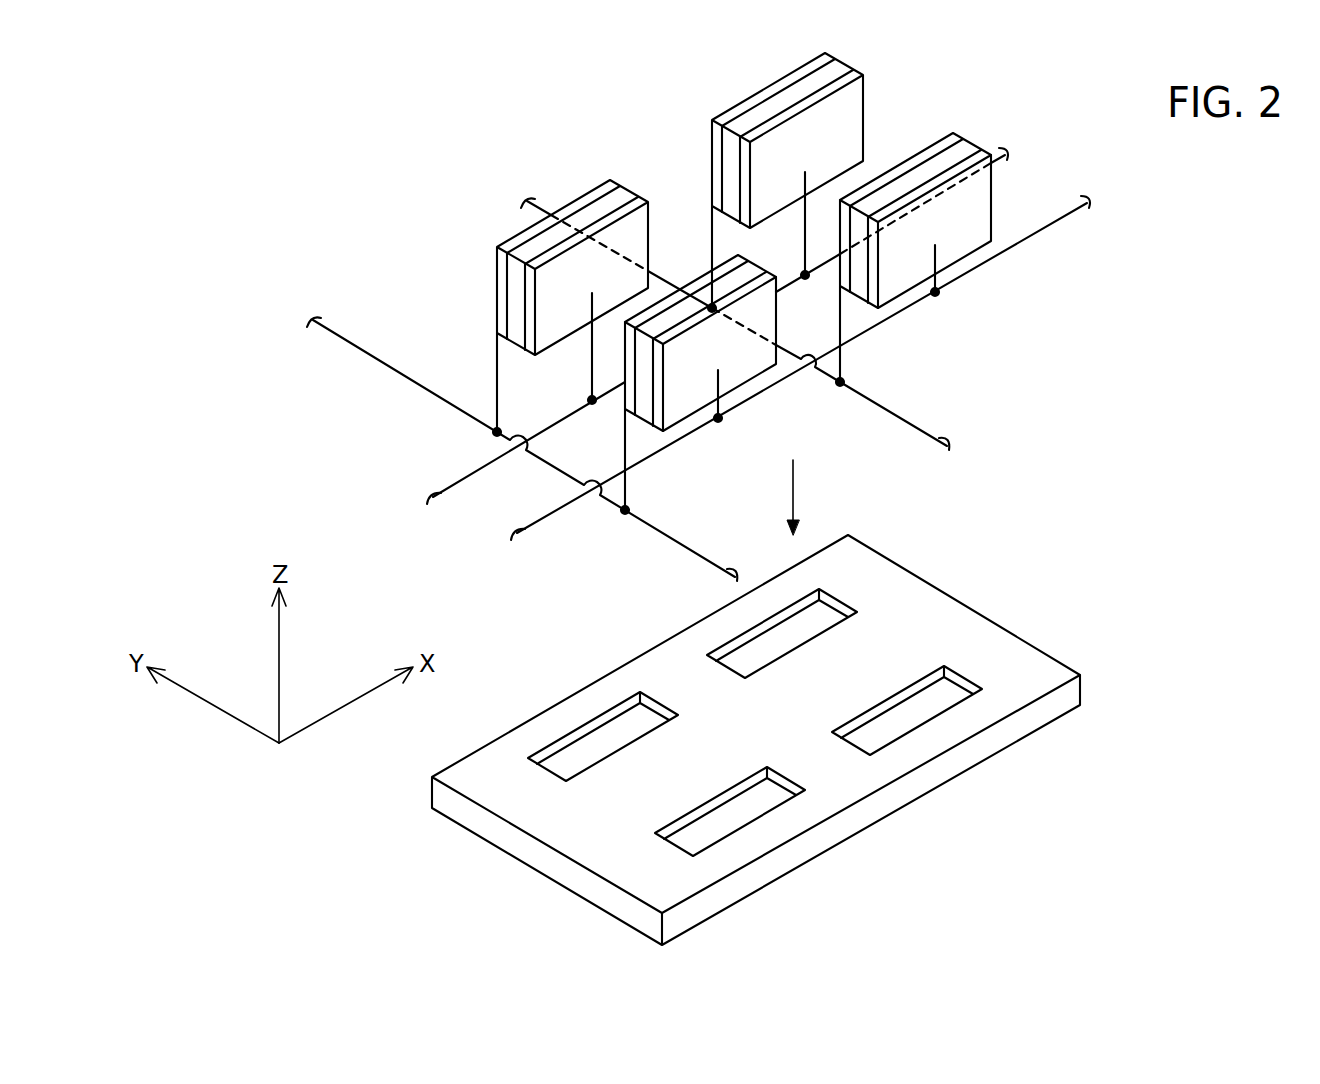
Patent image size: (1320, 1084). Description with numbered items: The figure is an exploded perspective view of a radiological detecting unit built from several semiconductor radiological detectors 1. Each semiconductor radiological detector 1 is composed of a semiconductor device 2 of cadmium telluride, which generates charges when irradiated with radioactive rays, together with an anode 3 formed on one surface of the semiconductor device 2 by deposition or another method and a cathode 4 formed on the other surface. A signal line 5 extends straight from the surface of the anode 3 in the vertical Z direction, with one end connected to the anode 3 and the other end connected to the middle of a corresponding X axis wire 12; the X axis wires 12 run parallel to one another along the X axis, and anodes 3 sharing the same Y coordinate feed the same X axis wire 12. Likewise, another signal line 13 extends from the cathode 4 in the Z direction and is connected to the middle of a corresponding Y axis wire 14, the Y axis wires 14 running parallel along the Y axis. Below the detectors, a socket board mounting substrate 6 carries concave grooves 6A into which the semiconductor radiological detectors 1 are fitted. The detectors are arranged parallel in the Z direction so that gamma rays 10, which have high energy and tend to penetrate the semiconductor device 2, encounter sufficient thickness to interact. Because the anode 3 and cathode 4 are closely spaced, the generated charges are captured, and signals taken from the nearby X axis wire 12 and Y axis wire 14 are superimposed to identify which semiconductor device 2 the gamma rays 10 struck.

The semiconductor radiological detector 1 is at (659, 202).
The semiconductor device 2 is at (962, 148).
The anode 3 is at (960, 245).
The cathode 4 is at (507, 240).
The signal line 5 is at (810, 180).
The socket board mounting substrate 6 is at (938, 602).
The concave groove 6A is at (603, 735).
The gamma rays 10 is at (742, 365).
The X axis wire 12 is at (543, 517).
The signal line 13 is at (497, 362).
The Y axis wire 14 is at (353, 345).